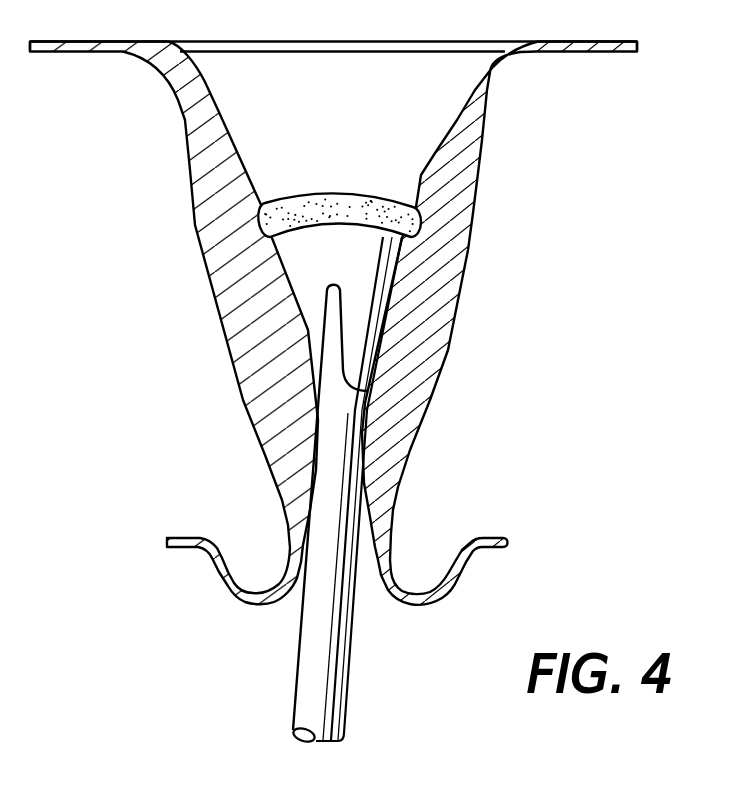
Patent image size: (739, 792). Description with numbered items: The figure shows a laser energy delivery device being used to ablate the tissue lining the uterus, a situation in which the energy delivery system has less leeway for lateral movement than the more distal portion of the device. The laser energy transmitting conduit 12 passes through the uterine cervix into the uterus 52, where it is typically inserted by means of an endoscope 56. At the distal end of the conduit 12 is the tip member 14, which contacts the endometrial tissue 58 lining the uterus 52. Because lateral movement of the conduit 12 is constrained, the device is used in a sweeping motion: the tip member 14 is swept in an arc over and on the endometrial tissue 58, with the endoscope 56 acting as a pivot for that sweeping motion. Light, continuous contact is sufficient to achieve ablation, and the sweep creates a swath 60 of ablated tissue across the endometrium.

The laser energy transmitting conduit 12 is at (364, 344).
The tip member 14 is at (397, 223).
The uterus 52 is at (467, 178).
The endoscope 56 is at (338, 647).
The endometrial tissue 58 is at (174, 323).
The swath of ablated tissue 60 is at (260, 228).